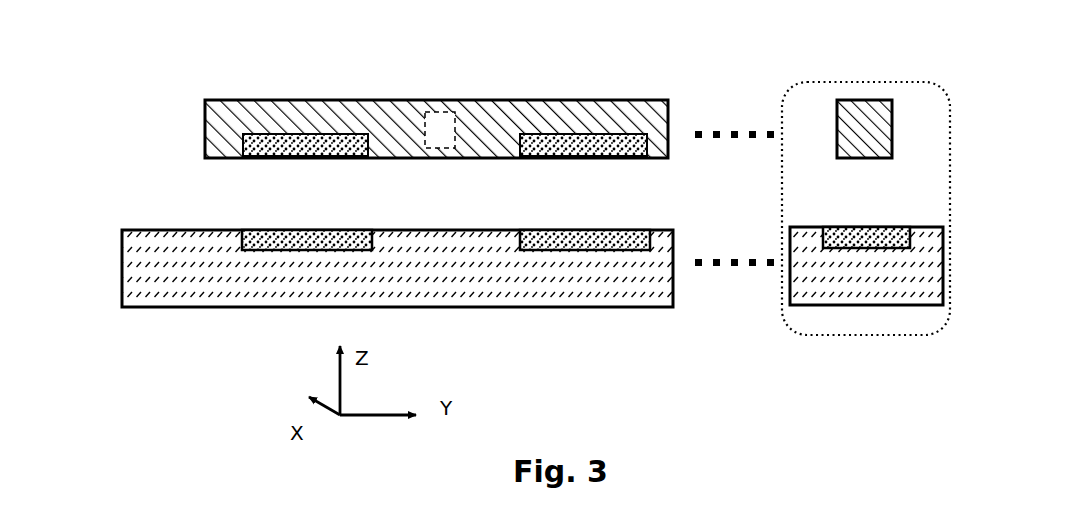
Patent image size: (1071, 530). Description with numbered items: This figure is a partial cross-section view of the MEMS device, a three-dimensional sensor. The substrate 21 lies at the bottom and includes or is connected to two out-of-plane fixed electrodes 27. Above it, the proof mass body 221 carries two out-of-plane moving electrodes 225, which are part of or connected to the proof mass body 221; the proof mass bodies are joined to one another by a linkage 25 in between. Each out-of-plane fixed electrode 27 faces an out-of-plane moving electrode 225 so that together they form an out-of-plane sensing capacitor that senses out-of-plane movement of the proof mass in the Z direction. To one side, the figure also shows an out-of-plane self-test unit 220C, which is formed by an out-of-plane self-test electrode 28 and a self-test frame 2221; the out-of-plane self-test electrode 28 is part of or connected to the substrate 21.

The substrate 21 is at (533, 307).
The linkage 25 is at (430, 108).
The out-of-plane fixed electrode 27 is at (252, 230).
The out-of-plane self-test electrode 28 is at (866, 227).
The proof mass body 221 is at (470, 100).
The out-of-plane moving electrode 225 is at (577, 158).
The out-of-plane self-test unit 220C is at (791, 90).
The self-test frame 2221 is at (857, 100).